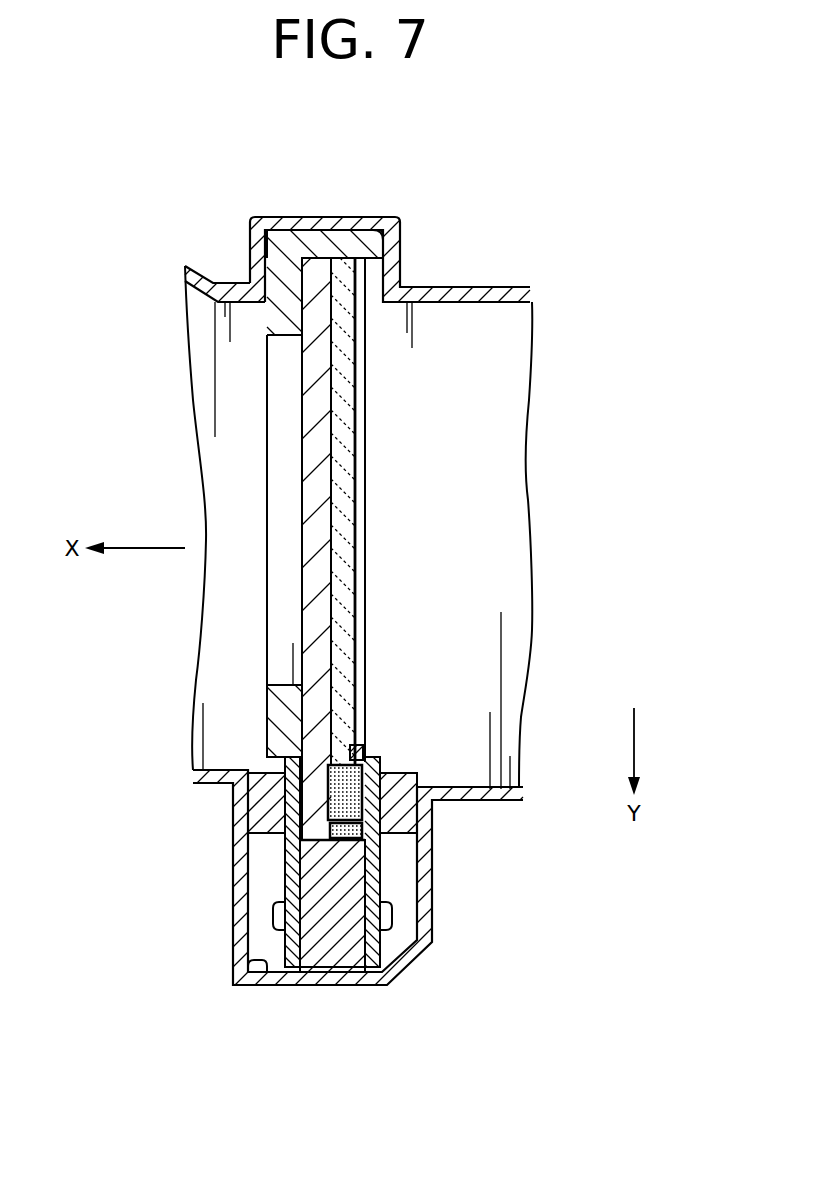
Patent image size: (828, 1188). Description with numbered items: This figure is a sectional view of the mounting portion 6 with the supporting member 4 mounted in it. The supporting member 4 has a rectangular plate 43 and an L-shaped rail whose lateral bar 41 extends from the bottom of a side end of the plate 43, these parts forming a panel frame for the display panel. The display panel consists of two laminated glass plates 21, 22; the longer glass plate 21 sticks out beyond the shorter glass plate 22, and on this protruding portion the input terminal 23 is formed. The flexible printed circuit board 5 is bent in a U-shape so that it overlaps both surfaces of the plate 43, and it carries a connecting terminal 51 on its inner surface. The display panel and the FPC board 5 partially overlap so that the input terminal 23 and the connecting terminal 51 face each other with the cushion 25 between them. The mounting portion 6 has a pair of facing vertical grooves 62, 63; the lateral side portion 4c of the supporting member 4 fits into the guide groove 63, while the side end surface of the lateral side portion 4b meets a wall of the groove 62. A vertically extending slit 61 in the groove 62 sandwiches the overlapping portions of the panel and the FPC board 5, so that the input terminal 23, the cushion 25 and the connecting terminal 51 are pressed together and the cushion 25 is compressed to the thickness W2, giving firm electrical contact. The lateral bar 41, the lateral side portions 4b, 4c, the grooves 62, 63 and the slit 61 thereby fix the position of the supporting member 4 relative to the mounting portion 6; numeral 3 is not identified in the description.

The holder member 3 is at (288, 432).
The supporting member 4 is at (363, 601).
The lateral side portion 4b is at (315, 967).
The lateral side portion 4c is at (313, 238).
The flexible printed circuit board 5 is at (290, 887).
The mounting portion 6 is at (477, 258).
The glass plate 21 is at (313, 638).
The glass plate 22 is at (350, 562).
The input terminal 23 is at (287, 762).
The cushion 25 is at (367, 760).
The lateral bar 41 is at (365, 507).
The plate 43 is at (340, 943).
The connecting terminal 51 is at (373, 765).
The slit 61 is at (260, 810).
The groove 62 is at (237, 970).
The groove 63 is at (368, 228).
The compressed cushion thickness W2 is at (375, 838).